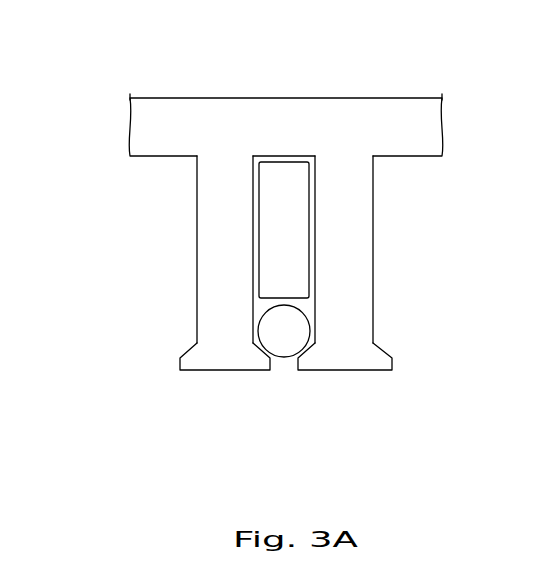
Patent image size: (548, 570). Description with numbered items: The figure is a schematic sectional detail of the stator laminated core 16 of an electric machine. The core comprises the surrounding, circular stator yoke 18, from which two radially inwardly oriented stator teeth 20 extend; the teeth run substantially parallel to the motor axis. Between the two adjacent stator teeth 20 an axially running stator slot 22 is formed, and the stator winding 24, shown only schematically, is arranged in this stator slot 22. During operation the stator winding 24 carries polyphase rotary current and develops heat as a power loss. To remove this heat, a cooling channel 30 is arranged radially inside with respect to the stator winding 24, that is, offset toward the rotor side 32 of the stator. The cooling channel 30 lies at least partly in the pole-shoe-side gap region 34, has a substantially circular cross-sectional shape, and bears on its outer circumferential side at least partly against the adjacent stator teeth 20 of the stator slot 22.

The stator laminated core 16 is at (261, 240).
The stator yoke 18 is at (137, 82).
The stator teeth 20 is at (218, 250).
The stator slot 22 is at (294, 156).
The stator winding 24 is at (277, 178).
The cooling channel 30 is at (283, 358).
The rotor side 32 is at (363, 370).
The pole-shoe-side gap region 34 is at (275, 372).